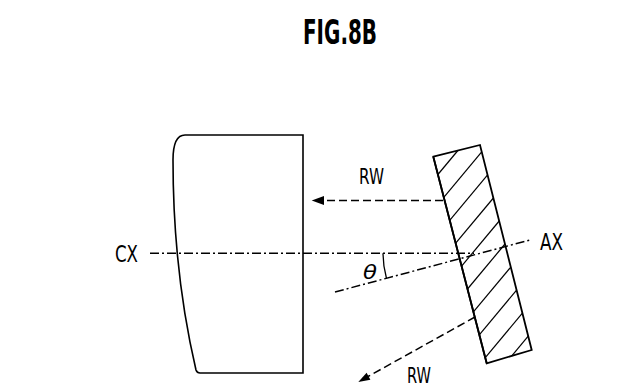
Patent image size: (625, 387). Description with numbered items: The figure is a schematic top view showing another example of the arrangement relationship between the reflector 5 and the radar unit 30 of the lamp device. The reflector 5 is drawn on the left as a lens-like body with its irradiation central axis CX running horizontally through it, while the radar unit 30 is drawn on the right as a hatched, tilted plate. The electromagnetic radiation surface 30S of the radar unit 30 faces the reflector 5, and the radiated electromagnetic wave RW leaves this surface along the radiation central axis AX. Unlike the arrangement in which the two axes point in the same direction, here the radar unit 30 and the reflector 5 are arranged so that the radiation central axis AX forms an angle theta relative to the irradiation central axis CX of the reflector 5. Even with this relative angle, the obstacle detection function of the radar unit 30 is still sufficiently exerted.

The reflector 5 is at (267, 135).
The radar unit 30 is at (476, 143).
The electromagnetic radiation surface 30S is at (470, 302).